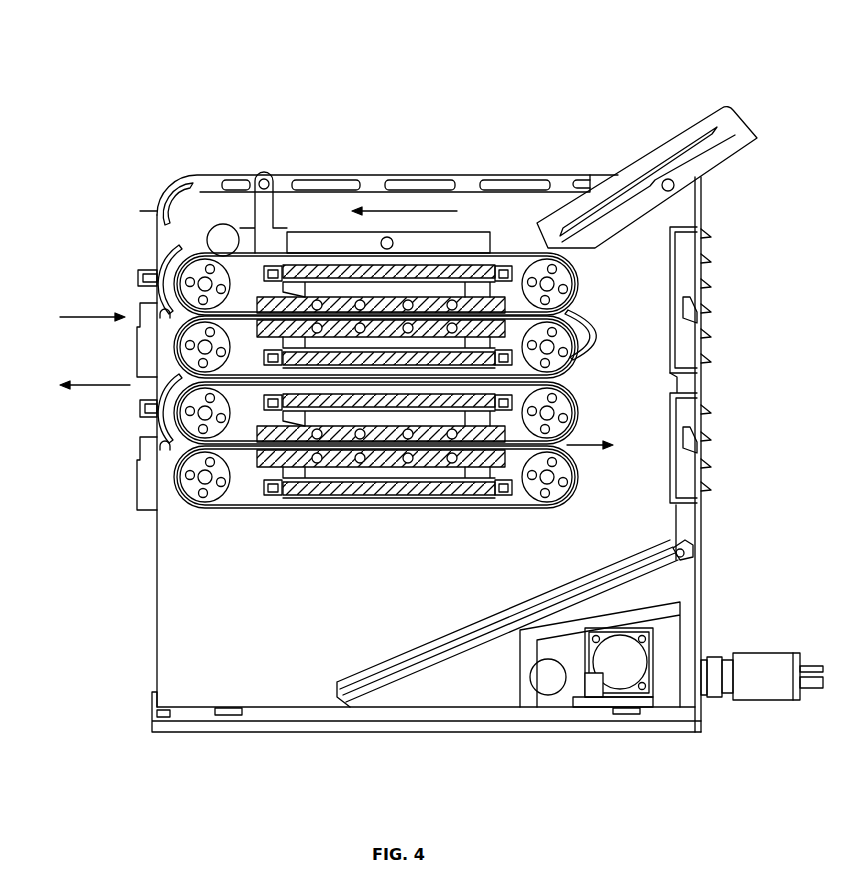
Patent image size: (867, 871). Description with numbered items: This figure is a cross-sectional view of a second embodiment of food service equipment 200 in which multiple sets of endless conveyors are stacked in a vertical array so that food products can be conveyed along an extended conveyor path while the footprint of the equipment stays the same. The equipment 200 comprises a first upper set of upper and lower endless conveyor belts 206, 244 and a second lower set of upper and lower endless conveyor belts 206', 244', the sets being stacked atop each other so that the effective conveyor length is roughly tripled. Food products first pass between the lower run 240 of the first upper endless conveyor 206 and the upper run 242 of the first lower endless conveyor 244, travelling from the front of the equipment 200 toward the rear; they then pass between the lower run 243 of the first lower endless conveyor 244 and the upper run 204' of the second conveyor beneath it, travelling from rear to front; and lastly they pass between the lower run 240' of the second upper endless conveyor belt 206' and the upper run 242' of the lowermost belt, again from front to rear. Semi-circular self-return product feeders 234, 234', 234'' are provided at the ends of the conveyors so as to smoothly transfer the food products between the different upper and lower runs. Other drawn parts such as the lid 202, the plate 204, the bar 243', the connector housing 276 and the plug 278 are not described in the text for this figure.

The food service equipment 200 is at (605, 88).
The lid 202 is at (733, 112).
The upper plate 204 is at (365, 181).
The upper run 204' is at (388, 459).
The first upper endless conveyor belt 206 is at (479, 284).
The second upper endless conveyor belt 206' is at (482, 413).
The semi-circular self-return product feeder 234 is at (135, 243).
The semi-circular self-return product feeder 234' is at (658, 345).
The semi-circular self-return product feeder 234'' is at (118, 445).
The lower run 240 is at (285, 325).
The lower run 240' is at (392, 495).
The upper run 242 is at (143, 432).
The upper run 242' is at (361, 521).
The lower run 243 is at (674, 348).
The bar 243' is at (388, 518).
The first lower endless conveyor belt 244 is at (143, 378).
The second lower endless conveyor belt 244' is at (156, 504).
The power connector 276 is at (621, 668).
The plug 278 is at (812, 690).